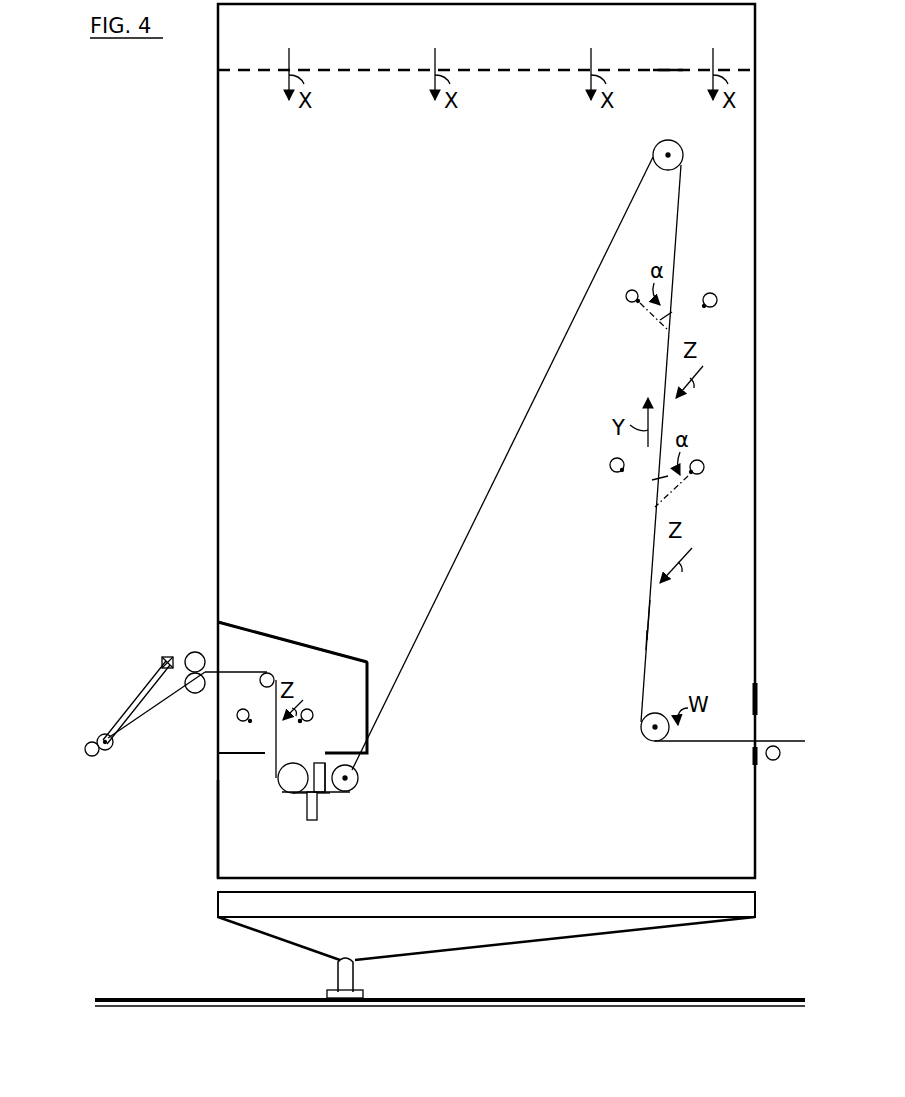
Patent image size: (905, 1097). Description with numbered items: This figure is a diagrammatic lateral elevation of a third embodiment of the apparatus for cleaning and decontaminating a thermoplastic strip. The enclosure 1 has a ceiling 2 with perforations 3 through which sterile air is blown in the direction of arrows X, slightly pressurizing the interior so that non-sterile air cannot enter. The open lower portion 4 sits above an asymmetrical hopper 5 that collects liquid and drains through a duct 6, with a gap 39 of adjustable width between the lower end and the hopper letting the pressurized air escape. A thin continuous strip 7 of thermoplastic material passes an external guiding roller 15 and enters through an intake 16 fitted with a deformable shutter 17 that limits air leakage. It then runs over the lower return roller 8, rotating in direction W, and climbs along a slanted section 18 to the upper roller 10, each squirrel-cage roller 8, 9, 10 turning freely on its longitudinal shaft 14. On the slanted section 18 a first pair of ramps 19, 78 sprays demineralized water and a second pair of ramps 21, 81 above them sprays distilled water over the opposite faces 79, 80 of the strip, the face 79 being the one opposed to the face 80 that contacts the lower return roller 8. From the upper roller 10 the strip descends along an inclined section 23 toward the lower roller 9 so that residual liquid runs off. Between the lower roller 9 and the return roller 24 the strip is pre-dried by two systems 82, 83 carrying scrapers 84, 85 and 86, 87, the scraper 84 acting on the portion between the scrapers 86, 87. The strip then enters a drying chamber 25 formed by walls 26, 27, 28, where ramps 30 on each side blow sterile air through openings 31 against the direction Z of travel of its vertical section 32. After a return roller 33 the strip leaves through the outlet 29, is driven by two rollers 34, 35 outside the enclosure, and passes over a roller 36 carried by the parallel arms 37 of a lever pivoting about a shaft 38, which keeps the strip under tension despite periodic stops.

The enclosure 1 is at (760, 208).
The ceiling 2 is at (632, 68).
The perforations 3 is at (683, 68).
The lower portion 4 is at (217, 843).
The hopper 5 is at (466, 948).
The duct 6 is at (340, 978).
The strip 7 is at (640, 658).
The lower return roller 8 is at (655, 725).
The lower roller 9 is at (359, 776).
The upper roller 10 is at (655, 150).
The longitudinal shaft 14 is at (668, 155).
The external guiding roller 15 is at (773, 760).
The intake 16 is at (768, 744).
The shutter 17 is at (760, 712).
The slanted section 18 is at (655, 378).
The ramp 19 is at (703, 474).
The ramp 21 is at (715, 293).
The inclined section 23 is at (496, 480).
The return roller 24 is at (290, 785).
The drying chamber 25 is at (262, 640).
The wall 26 is at (242, 628).
The wall 27 is at (372, 680).
The wall 28 is at (232, 756).
The outlet 29 is at (213, 670).
The ramps 30 is at (243, 709).
The openings 31 is at (302, 722).
The vertical section 32 is at (273, 750).
The return roller 33 is at (272, 675).
The roller 34 is at (190, 653).
The roller 35 is at (195, 694).
The roller 36 is at (105, 752).
The parallel arms 37 is at (128, 706).
The shaft 38 is at (165, 658).
The gap 39 is at (602, 890).
The ramp 78 is at (612, 472).
The face 79 is at (648, 620).
The face 80 is at (649, 637).
The ramp 81 is at (626, 293).
The pre-drying system 82 is at (318, 770).
The pre-drying system 83 is at (312, 822).
The scraper 84 is at (322, 780).
The scraper 85 is at (340, 790).
The scraper 86 is at (305, 795).
The scraper 87 is at (320, 798).